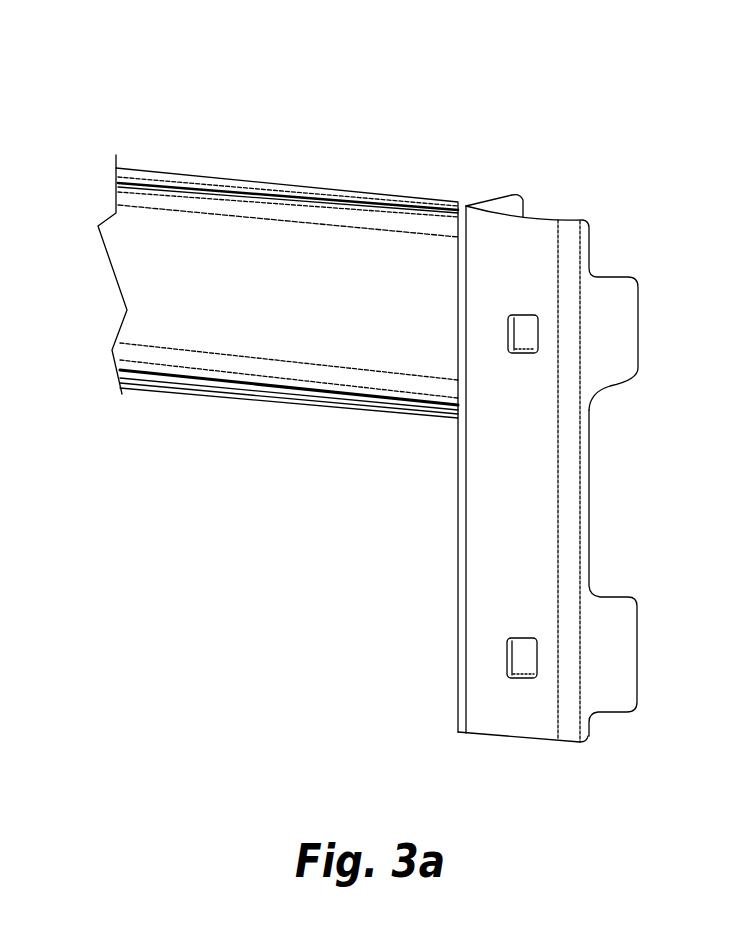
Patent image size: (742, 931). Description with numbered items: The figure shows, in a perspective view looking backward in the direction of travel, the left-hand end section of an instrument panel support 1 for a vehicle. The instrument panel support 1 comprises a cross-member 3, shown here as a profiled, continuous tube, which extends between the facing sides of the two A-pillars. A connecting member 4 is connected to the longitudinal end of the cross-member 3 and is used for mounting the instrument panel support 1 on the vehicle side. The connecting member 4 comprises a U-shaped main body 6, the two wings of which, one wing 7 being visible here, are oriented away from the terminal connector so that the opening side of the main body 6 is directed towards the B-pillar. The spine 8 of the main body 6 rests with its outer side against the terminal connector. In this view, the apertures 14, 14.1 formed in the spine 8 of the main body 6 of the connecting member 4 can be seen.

The instrument panel support 1 is at (365, 182).
The cross-member 3 is at (281, 316).
The connecting member 4 is at (600, 211).
The main body 6 is at (600, 258).
The wing 7 is at (585, 435).
The spine 8 is at (505, 519).
The aperture 14 is at (515, 340).
The aperture 14.1 is at (520, 665).